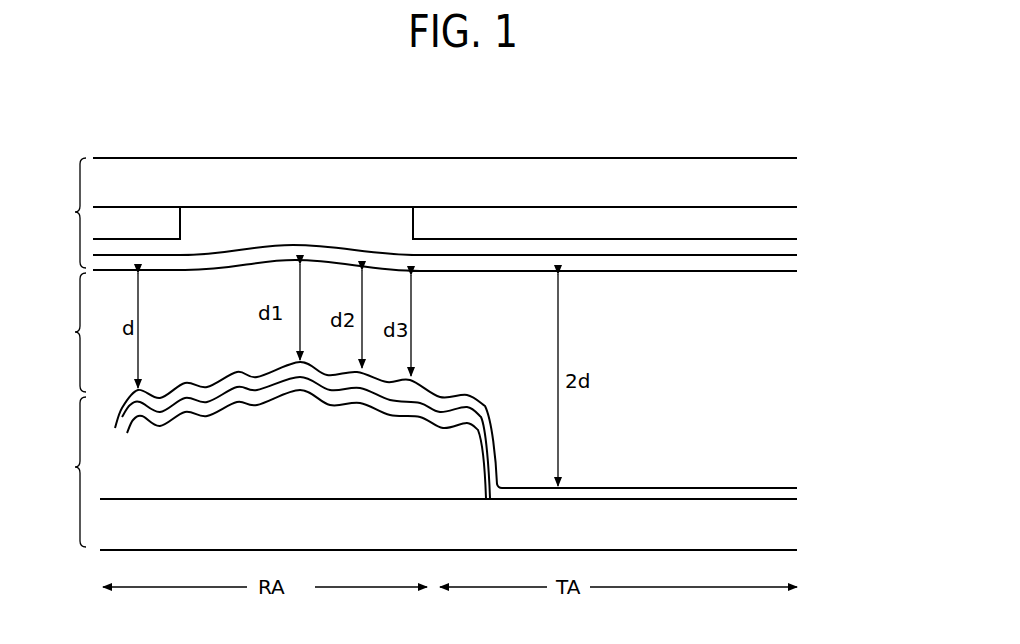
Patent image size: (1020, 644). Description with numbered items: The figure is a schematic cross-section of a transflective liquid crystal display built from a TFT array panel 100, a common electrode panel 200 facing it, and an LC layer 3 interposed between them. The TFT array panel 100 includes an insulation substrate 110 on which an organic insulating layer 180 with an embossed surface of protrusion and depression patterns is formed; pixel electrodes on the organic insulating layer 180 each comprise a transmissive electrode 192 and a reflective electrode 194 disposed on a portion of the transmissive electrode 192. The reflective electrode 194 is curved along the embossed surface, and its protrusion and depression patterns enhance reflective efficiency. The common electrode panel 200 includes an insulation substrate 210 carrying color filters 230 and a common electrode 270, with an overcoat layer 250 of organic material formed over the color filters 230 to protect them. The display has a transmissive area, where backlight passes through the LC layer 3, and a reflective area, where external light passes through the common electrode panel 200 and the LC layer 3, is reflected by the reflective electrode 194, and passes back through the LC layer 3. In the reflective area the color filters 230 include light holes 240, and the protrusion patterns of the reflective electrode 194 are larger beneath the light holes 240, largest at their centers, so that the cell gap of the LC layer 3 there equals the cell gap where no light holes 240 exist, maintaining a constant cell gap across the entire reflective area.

The insulation substrate 210 is at (792, 181).
The color filters 230 is at (792, 222).
The overcoat layer 250 is at (792, 247).
The common electrode 270 is at (792, 263).
The light holes 240 is at (290, 224).
The common electrode panel 200 is at (55, 213).
The LC layer 3 is at (70, 332).
The TFT array panel 100 is at (58, 472).
The insulation substrate 110 is at (448, 524).
The organic insulating layer 180 is at (325, 447).
The transmissive electrode 192 is at (446, 420).
The reflective electrode 194 is at (476, 402).